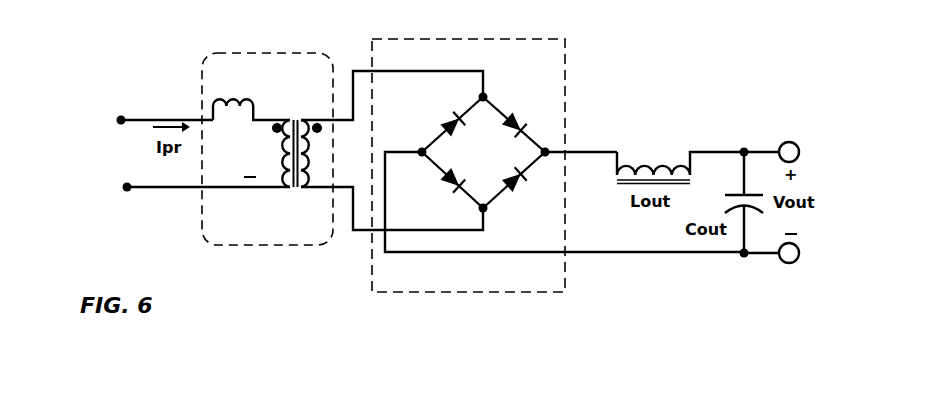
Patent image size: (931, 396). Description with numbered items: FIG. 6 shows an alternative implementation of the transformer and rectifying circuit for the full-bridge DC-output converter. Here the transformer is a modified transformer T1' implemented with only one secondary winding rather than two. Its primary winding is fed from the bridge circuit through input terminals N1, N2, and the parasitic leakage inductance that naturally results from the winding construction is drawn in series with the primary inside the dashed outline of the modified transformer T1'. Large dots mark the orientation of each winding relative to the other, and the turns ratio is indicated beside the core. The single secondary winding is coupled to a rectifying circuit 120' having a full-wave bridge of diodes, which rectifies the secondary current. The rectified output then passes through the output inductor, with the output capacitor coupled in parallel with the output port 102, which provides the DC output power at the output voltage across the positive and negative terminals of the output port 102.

The output port 102 is at (781, 143).
The rectifying circuit 120' is at (490, 147).
The modified transformer T1' is at (267, 170).
The first input node N1 is at (123, 191).
The second input node N2 is at (117, 124).